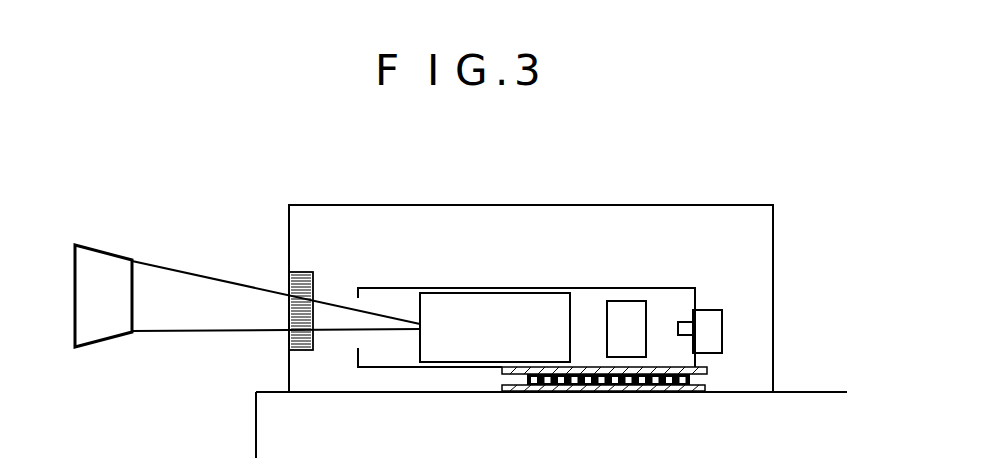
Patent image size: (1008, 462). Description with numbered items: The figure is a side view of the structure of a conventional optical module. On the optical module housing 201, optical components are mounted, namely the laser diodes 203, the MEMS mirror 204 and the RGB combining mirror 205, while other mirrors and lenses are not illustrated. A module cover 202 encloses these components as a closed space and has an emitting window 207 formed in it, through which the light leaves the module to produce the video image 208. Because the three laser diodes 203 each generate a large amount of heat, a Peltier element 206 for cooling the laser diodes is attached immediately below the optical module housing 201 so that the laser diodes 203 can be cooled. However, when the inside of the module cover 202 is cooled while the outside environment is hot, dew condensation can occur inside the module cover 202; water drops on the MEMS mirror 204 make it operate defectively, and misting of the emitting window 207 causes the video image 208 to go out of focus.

The optical module housing 201 is at (380, 288).
The module cover 202 is at (489, 205).
The laser diodes (LDs) 203 is at (707, 317).
The MEMS mirror 204 is at (438, 352).
The RGB combining mirror 205 is at (626, 316).
The Peltier element (for cooling LD) 206 is at (507, 378).
The emitting window 207 is at (290, 287).
The video image 208 is at (108, 253).